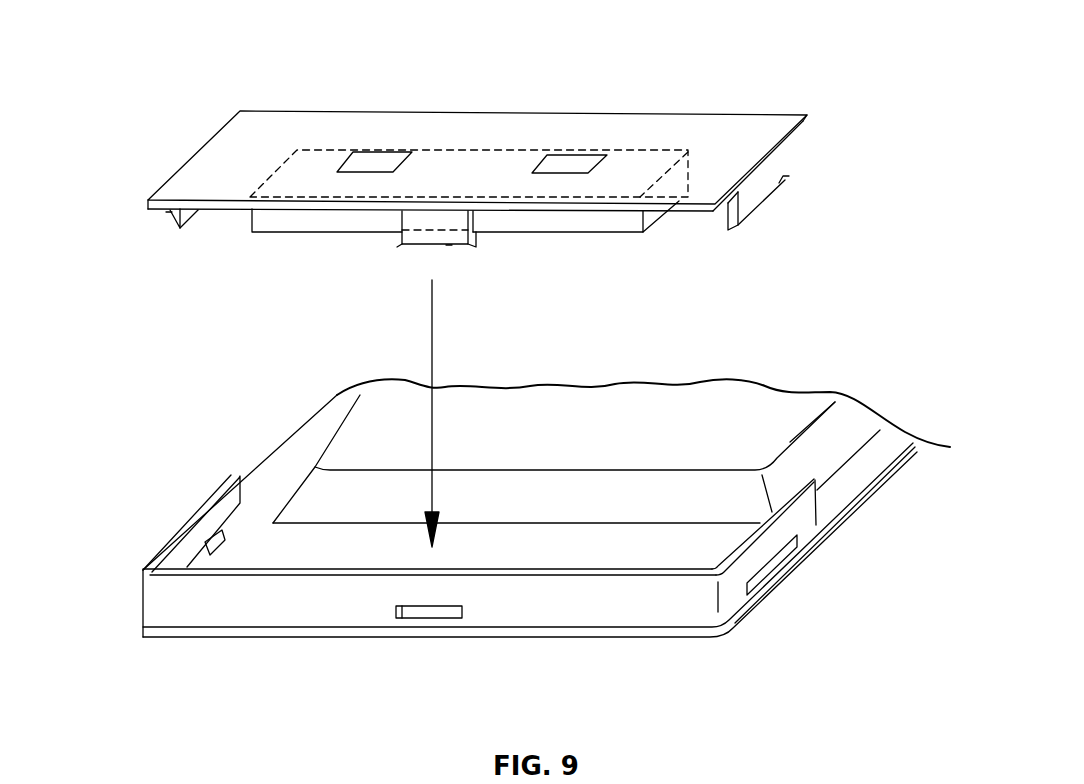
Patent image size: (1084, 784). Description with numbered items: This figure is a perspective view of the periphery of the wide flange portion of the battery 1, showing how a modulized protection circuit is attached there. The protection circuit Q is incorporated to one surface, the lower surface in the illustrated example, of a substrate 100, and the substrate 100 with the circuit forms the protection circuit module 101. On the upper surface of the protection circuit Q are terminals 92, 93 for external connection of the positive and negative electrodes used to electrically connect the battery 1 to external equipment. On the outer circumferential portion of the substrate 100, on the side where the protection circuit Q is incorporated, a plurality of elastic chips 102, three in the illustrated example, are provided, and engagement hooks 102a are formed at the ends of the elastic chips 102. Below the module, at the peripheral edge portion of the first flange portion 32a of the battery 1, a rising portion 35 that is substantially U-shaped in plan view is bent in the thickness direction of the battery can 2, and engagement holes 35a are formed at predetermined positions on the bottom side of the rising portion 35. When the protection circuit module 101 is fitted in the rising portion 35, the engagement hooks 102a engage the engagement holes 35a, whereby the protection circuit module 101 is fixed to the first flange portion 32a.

The protection circuit module 101 is at (670, 96).
The substrate 100 is at (762, 128).
The terminal 93 is at (377, 162).
The terminal 92 is at (569, 162).
The protection circuit Q is at (614, 220).
The elastic chips 102 is at (783, 178).
The engagement hooks 102a is at (167, 218).
The battery 1 is at (308, 430).
The battery can 2 is at (634, 428).
The rising portion 35 is at (278, 607).
The engagement holes 35a is at (232, 548).
The first flange portion 32a is at (665, 553).